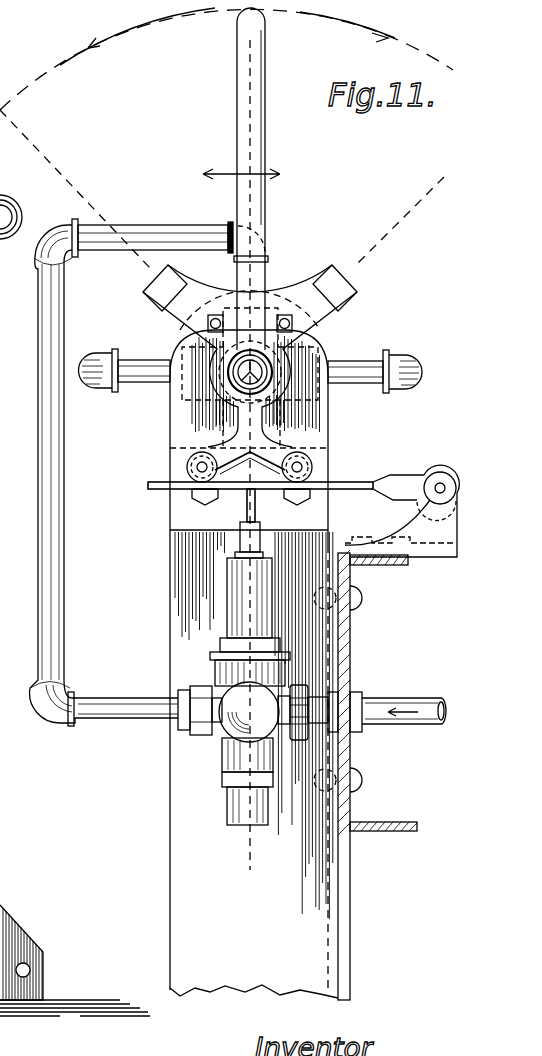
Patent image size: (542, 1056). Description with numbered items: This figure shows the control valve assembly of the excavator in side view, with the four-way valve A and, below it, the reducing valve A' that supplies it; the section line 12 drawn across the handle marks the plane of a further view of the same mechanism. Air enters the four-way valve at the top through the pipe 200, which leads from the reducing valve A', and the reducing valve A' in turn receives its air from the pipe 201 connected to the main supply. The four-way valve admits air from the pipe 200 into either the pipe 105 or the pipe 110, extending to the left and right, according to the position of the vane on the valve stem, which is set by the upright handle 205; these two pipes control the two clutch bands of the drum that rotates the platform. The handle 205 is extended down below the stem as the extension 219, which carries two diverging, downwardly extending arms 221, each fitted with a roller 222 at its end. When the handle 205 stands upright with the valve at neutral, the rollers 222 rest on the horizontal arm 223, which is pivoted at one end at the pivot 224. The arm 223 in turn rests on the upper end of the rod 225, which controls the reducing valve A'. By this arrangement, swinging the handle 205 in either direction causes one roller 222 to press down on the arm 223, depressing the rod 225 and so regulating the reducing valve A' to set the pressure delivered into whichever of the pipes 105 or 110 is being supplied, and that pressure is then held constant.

The handle 205 is at (246, 104).
The direction arrow 12 is at (241, 164).
The pipe 200 is at (140, 233).
The pipe 105 is at (133, 368).
The pipe 110 is at (358, 367).
The diverging downwardly extending arms 221 is at (283, 467).
The extension 219 is at (256, 418).
The roller 222 is at (188, 465).
The horizontal arm 223 is at (163, 488).
The pivot 224 is at (438, 472).
The rod 225 is at (247, 500).
The reducing valve A' is at (226, 688).
The pipe 201 is at (397, 700).